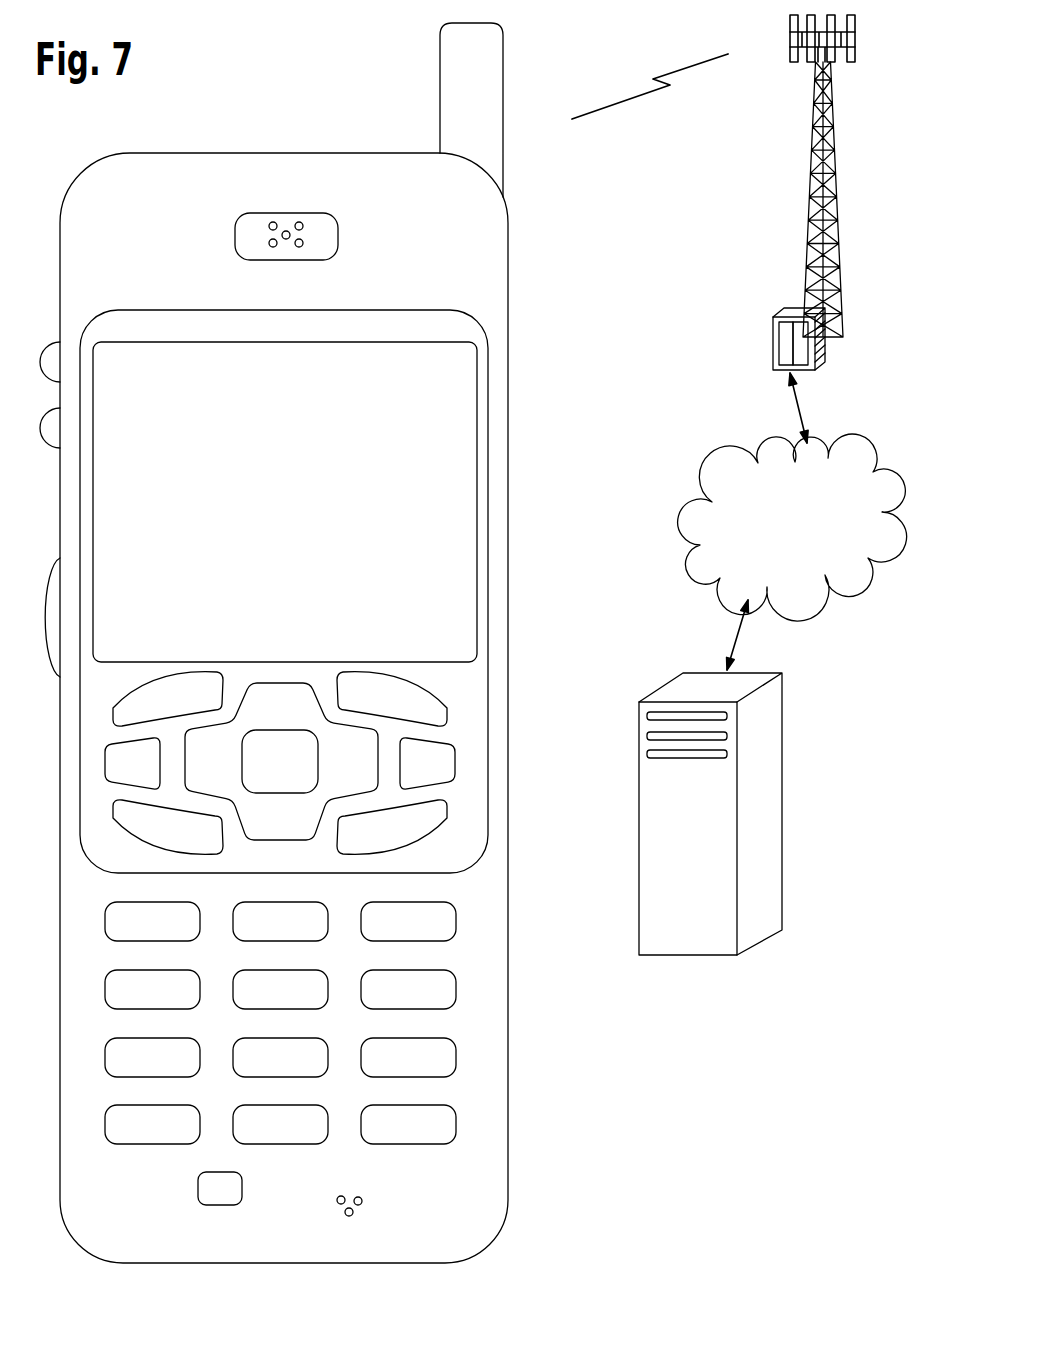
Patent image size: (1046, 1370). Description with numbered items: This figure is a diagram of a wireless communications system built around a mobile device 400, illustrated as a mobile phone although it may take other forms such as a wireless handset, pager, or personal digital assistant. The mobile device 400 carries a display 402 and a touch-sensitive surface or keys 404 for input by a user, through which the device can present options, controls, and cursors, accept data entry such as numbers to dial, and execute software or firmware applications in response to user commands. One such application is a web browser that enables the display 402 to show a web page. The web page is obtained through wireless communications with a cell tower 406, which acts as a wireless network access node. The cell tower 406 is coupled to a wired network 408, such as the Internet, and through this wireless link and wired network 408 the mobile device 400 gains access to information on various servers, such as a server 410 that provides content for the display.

The mobile device 400 is at (113, 1263).
The display 402 is at (478, 357).
The keys 404 is at (520, 672).
The cell tower 406 is at (808, 210).
The wired network 408 is at (705, 578).
The server 410 is at (693, 955).